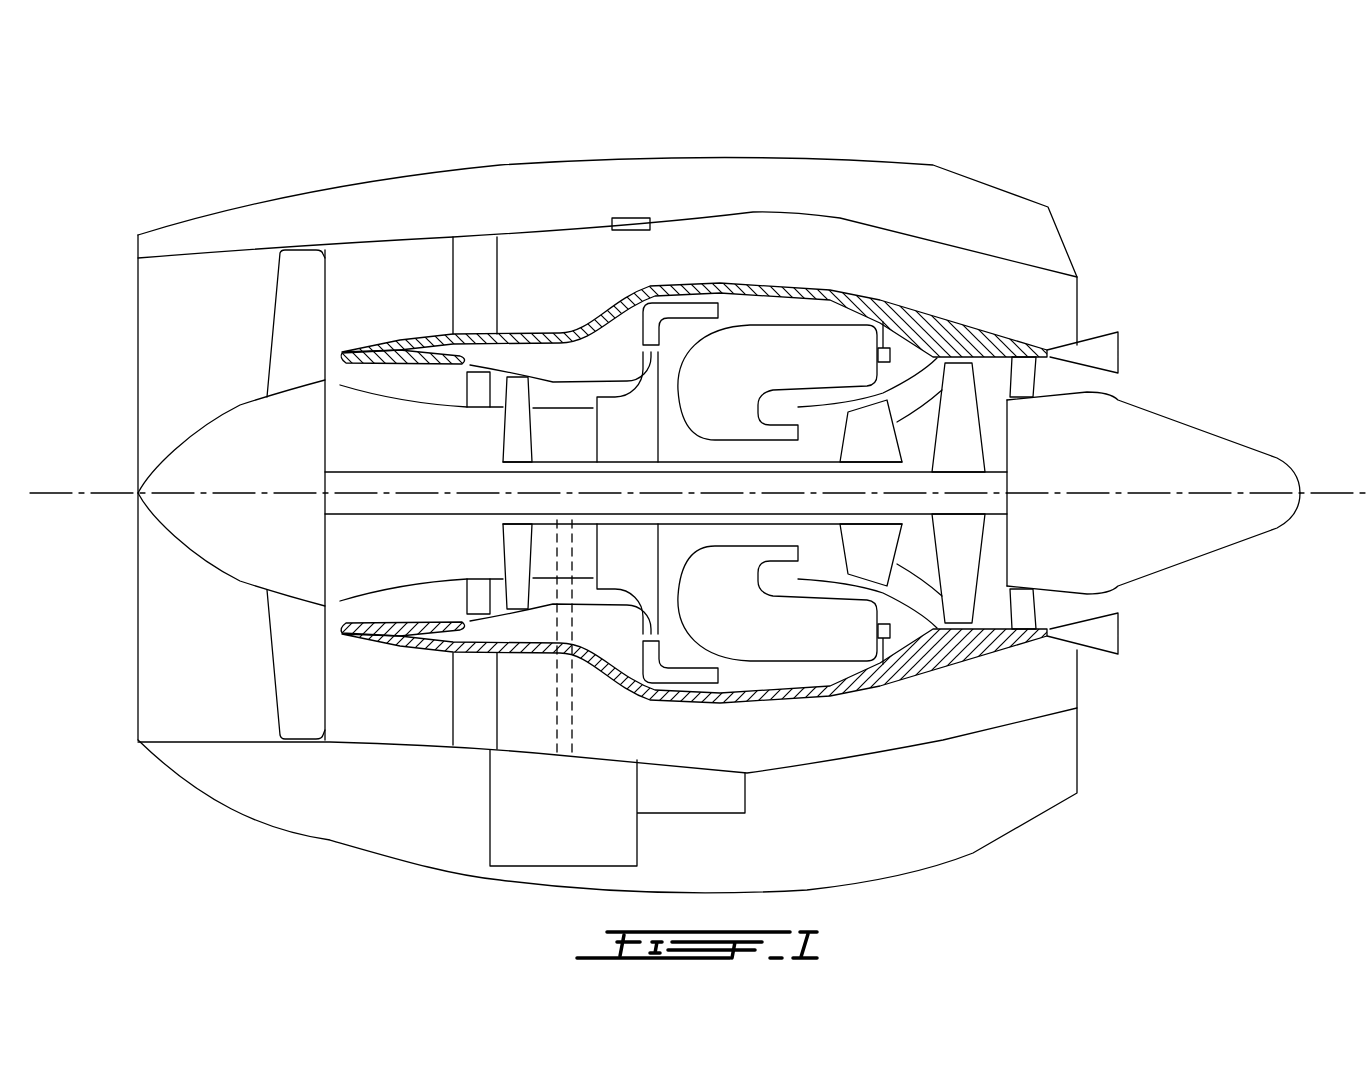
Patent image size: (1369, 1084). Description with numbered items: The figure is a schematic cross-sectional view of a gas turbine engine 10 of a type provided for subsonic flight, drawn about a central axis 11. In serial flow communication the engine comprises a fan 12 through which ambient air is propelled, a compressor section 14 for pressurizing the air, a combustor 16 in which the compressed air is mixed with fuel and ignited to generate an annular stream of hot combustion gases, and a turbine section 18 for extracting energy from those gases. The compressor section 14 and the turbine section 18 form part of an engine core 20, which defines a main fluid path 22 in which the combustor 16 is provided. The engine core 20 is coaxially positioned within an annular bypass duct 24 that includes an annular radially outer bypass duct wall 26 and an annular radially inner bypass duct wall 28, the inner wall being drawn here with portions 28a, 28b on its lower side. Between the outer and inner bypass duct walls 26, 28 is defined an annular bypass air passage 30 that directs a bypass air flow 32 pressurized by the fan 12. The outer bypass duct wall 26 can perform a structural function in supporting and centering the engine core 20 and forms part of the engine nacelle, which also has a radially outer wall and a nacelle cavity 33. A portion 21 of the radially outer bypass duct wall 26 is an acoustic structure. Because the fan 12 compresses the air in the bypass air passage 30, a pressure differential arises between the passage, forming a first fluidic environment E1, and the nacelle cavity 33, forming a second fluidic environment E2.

The gas turbine engine 10 is at (935, 162).
The engine centerline axis 11 is at (1338, 493).
The fan 12 is at (283, 648).
The compressor section 14 is at (557, 383).
The combustor 16 is at (780, 345).
The turbine section 18 is at (917, 565).
The engine core 20 is at (1130, 352).
The portion of radially outer bypass duct wall 21 is at (632, 216).
The main fluid path 22 is at (594, 370).
The annular bypass duct 24 is at (1020, 295).
The radially outer bypass duct wall 26 is at (383, 240).
The radially inner bypass duct wall 28 is at (413, 343).
The casing first portion 28a is at (473, 653).
The casing second portion 28b is at (530, 660).
The annular bypass air passage 30 is at (562, 285).
The bypass air flow 32 is at (510, 302).
The nacelle cavity 33 is at (705, 192).
The first fluidic environment E1 is at (627, 271).
The second fluidic environment E2 is at (580, 196).